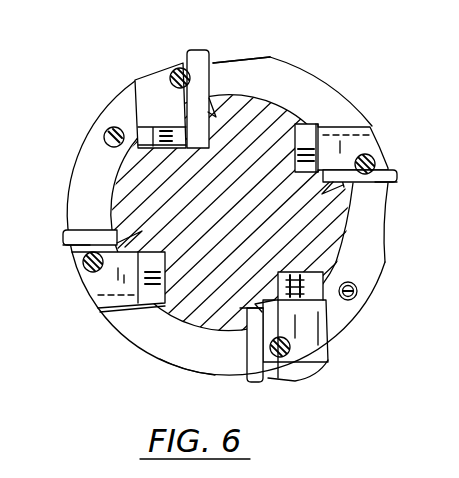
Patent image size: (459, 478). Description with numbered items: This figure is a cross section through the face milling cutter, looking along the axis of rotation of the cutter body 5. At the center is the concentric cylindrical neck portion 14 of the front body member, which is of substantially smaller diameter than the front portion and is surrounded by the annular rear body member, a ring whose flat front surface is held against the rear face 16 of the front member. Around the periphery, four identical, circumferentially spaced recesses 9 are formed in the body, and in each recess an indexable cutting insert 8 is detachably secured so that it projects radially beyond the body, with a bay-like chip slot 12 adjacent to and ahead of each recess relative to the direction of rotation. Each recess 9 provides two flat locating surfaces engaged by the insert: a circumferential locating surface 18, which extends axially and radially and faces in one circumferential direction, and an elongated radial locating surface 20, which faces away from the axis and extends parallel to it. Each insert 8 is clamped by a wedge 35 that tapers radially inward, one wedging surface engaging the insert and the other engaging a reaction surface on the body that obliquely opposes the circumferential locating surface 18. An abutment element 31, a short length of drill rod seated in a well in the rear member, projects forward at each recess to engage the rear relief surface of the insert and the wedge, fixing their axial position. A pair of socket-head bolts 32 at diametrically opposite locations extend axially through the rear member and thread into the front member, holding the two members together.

The cutter body 5 is at (334, 40).
The indexable cutting insert 8 is at (210, 48).
The recess 9 is at (303, 257).
The chip slot 12 is at (243, 60).
The neck portion 14 is at (340, 259).
The rear face 16 is at (187, 350).
The circumferential locating surface 18 is at (394, 181).
The radial locating surface 20 is at (147, 238).
The abutment element 31 is at (173, 70).
The socket-head bolt 32 is at (104, 133).
The wedge 35 is at (135, 80).